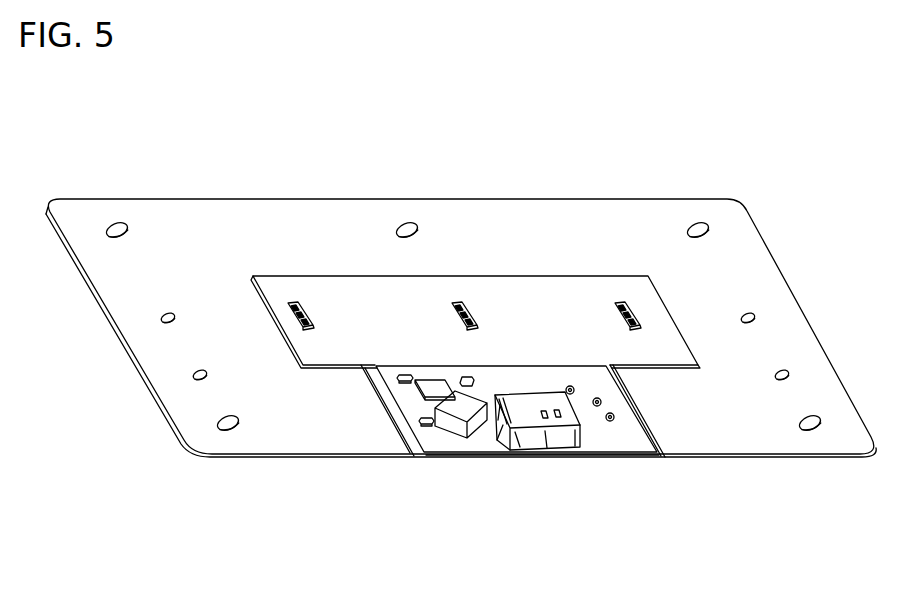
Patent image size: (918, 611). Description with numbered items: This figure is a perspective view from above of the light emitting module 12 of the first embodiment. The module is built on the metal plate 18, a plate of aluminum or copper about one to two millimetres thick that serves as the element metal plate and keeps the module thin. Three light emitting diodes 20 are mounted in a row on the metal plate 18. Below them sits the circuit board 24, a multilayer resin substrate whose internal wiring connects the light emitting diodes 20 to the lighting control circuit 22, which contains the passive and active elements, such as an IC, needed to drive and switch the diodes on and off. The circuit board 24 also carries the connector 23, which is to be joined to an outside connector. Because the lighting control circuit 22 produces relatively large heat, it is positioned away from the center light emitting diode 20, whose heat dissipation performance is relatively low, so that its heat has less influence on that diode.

The light emitting module 12 is at (623, 599).
The metal plate 18 is at (568, 220).
The light emitting diodes 20 is at (297, 302).
The lighting control circuit 22 is at (424, 404).
The connector 23 is at (533, 410).
The circuit board 24 is at (595, 378).